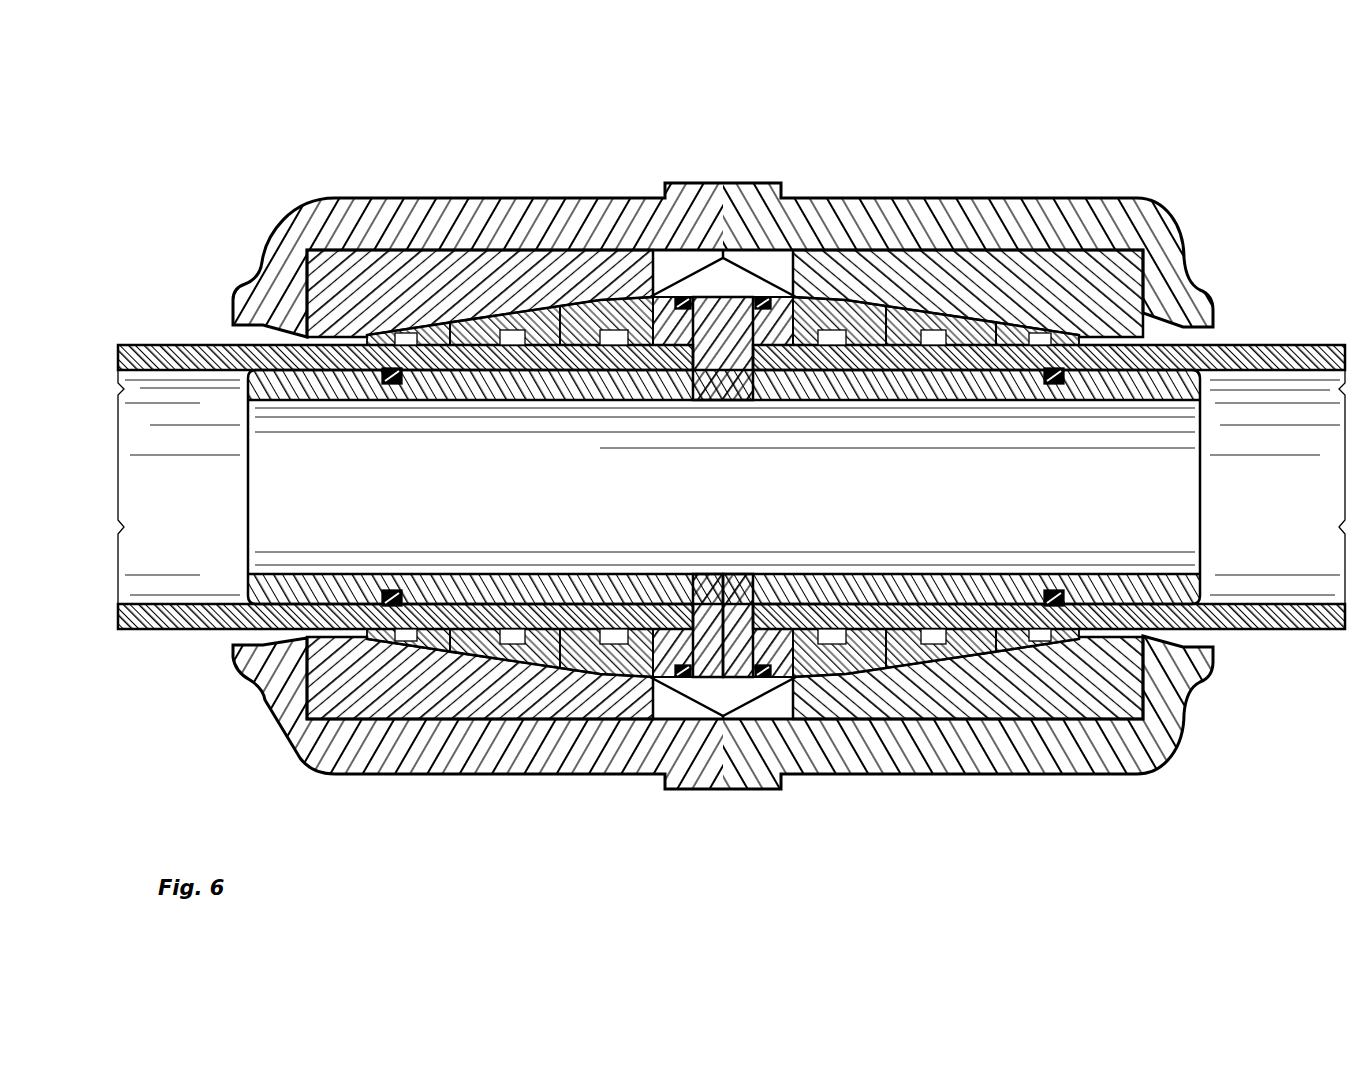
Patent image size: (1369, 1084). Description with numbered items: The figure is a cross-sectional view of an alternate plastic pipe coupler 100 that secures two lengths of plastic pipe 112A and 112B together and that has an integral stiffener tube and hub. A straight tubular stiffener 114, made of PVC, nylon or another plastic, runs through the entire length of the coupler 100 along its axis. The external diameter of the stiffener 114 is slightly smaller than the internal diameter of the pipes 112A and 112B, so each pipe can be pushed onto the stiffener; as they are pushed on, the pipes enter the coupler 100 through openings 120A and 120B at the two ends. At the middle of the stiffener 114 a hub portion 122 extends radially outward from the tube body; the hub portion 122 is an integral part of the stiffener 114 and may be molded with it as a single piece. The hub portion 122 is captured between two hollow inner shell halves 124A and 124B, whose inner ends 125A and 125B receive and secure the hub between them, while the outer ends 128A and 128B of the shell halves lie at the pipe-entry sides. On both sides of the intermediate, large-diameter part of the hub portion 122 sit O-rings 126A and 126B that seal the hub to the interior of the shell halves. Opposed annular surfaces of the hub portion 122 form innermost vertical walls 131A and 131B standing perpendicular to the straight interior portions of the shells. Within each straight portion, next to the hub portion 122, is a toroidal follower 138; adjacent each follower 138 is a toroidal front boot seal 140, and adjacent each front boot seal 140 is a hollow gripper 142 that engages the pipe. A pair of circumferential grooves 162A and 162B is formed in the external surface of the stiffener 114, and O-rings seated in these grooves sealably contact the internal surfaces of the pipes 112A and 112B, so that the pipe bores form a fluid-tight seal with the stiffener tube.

The coupler 100 is at (1125, 182).
The plastic pipe 112A is at (185, 348).
The plastic pipe 112B is at (1287, 343).
The tubular stiffener 114 is at (897, 380).
The opening 120A is at (238, 637).
The opening 120B is at (1217, 638).
The hub portion 122 is at (712, 330).
The inner shell half 124A is at (525, 280).
The inner shell half 124B is at (975, 272).
The inner end 125A is at (702, 700).
The inner end 125B is at (743, 700).
The O-ring 126A is at (682, 296).
The O-ring 126B is at (765, 296).
The outer end 128A is at (325, 280).
The outer end 128B is at (1115, 287).
The innermost vertical wall 131A is at (665, 296).
The innermost vertical wall 131B is at (868, 300).
The toroidal follower 138 is at (613, 668).
The front boot seal 140 is at (497, 665).
The hollow gripper 142 is at (418, 668).
The circumferential groove 162A is at (398, 588).
The circumferential groove 162B is at (1056, 588).